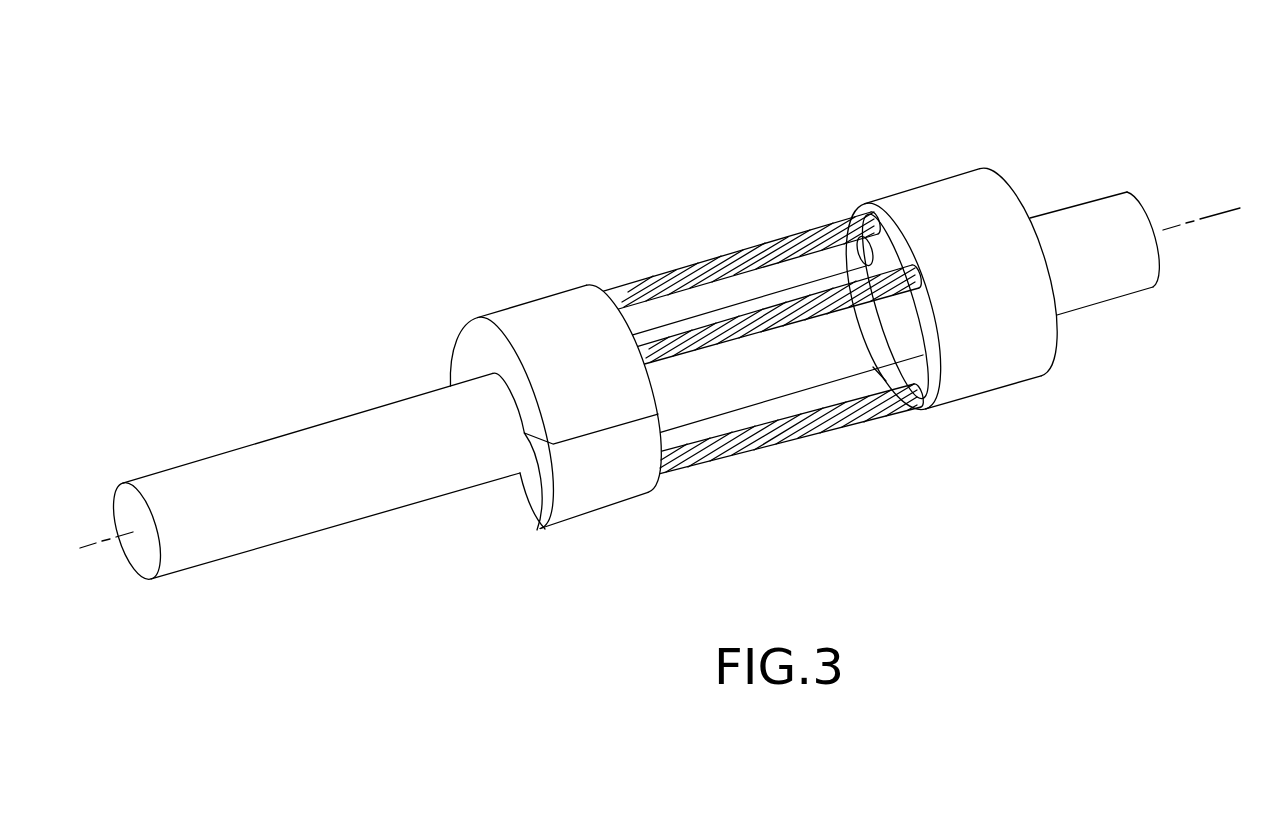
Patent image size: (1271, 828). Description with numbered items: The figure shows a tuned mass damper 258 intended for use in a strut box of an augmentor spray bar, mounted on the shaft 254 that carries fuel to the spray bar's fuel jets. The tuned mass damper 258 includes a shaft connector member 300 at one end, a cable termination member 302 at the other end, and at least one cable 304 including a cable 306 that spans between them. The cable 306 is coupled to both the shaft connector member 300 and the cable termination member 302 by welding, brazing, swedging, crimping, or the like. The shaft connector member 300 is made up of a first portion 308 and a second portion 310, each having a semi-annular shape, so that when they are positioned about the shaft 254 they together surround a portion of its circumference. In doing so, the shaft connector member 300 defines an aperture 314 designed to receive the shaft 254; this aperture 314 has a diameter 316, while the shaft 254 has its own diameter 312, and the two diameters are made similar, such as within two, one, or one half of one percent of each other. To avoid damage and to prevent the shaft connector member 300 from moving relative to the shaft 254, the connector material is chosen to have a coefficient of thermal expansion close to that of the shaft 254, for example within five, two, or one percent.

The shaft 254 is at (203, 530).
The tuned mass damper 258 is at (616, 54).
The shaft connector member 300 is at (487, 361).
The cable termination member 302 is at (943, 196).
The cable 304 is at (677, 268).
The cable 306 is at (797, 230).
The first portion 308 is at (548, 318).
The second portion 310 is at (603, 482).
The diameter 312 is at (340, 542).
The aperture 314 is at (540, 516).
The diameter 316 is at (524, 488).